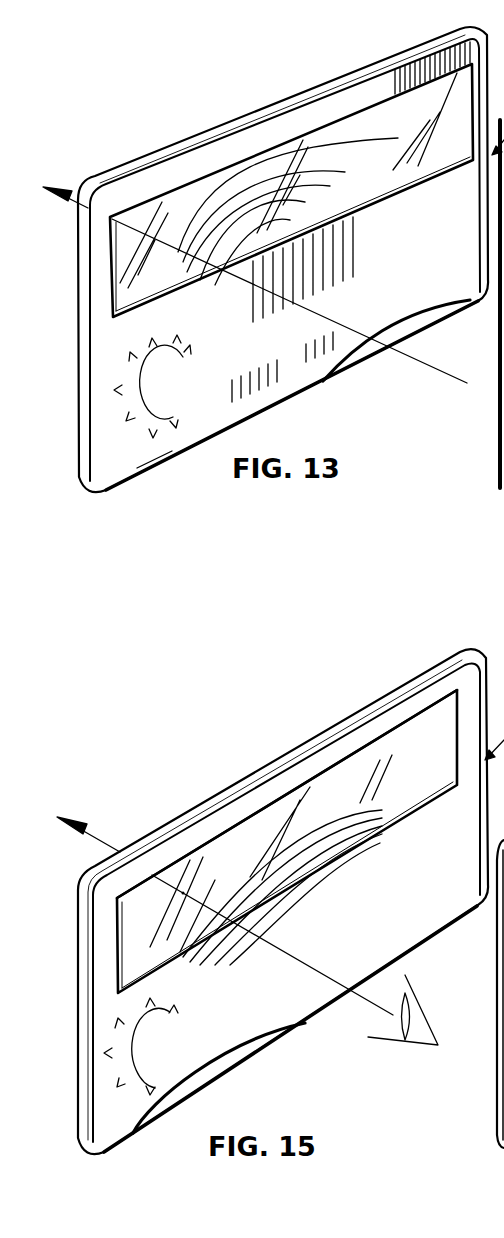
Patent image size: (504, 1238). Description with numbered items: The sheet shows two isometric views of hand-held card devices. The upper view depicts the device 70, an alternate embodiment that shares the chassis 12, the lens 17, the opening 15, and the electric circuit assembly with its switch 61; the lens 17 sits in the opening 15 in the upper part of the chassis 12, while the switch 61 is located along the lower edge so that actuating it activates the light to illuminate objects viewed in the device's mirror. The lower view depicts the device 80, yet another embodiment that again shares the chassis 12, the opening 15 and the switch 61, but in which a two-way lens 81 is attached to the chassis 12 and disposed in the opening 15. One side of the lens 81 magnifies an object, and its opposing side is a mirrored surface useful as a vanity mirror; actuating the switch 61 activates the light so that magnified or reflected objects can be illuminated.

In FIG. 13, the device 70 is at (276, 66).
In FIG. 13, the opening 15 is at (205, 207).
In FIG. 15, the opening 15 is at (212, 853).
In FIG. 13, the lens 17 is at (367, 122).
In FIG. 13, the switch 61 is at (405, 327).
In FIG. 15, the switch 61 is at (220, 1062).
In FIG. 13, the chassis 12 is at (494, 447).
In FIG. 15, the device 80 is at (304, 714).
In FIG. 15, the two-way lens 81 is at (372, 753).